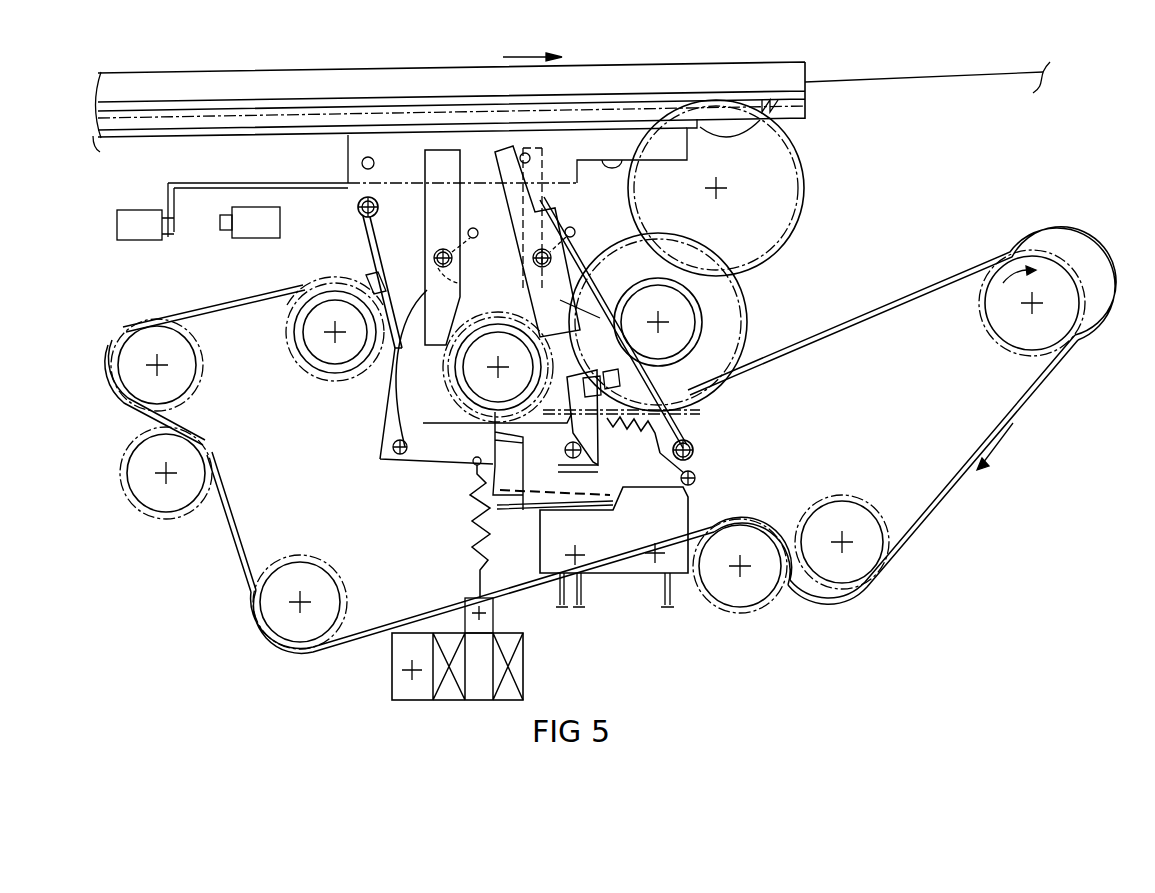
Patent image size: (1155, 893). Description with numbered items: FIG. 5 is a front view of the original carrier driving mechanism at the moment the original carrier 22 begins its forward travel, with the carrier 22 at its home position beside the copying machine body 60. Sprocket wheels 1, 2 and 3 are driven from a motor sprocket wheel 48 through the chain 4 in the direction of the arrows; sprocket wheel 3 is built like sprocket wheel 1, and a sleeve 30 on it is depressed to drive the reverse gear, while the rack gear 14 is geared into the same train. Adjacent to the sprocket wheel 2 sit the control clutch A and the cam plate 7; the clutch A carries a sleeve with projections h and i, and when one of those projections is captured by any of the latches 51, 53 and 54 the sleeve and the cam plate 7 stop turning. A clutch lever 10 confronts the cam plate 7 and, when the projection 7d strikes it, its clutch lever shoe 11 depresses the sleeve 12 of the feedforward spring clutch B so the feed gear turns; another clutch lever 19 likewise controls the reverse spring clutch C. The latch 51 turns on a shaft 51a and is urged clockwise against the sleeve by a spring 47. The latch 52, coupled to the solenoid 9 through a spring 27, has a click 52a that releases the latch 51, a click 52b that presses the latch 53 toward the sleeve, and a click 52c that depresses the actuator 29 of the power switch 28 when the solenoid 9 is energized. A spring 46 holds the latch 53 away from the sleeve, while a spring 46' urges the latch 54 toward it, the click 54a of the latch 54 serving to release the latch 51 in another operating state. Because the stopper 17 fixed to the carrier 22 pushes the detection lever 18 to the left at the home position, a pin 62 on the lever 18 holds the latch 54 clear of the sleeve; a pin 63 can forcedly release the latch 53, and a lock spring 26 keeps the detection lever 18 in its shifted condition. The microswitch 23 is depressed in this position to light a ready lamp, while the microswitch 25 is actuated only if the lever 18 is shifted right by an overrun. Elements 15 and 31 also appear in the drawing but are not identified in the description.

The original carrier 22 is at (790, 72).
The electrophotographic copying machine body 60 is at (984, 89).
The stop member 15 is at (776, 103).
The stopper 17 is at (787, 147).
The rack gear 14 is at (782, 197).
The clutch lever 19 is at (360, 233).
The detection lever 18 is at (335, 185).
The lock spring 26 is at (611, 167).
The microswitch 23 is at (137, 232).
The microswitch 25 is at (255, 228).
The pin 63 is at (372, 168).
The latch 53 is at (437, 213).
The pad 31 is at (378, 279).
The spring 46 is at (474, 255).
The pin 62 is at (522, 164).
The spring 46' is at (568, 242).
The cam plate 7 is at (510, 290).
The projection 7d is at (585, 268).
The latch 54 is at (545, 216).
The clutch lever 10 is at (690, 430).
The spring 47 is at (637, 450).
The click 54a is at (641, 435).
The sprocket wheel 1 is at (722, 350).
The sleeve 12 is at (702, 327).
The feedforward spring clutch B is at (700, 318).
The clutch lever shoe 11 is at (620, 385).
The sleeve 30 is at (303, 343).
The sprocket wheel 3 is at (320, 373).
The reverse spring clutch C is at (337, 355).
The sprocket wheel 2 is at (486, 372).
The control clutch A is at (465, 405).
The latch 52 is at (412, 453).
The click 52b is at (430, 345).
The projection h is at (470, 360).
The projection i is at (478, 400).
The spring 27 is at (468, 530).
The click 52a is at (476, 494).
The click 52c is at (500, 565).
The actuator 29 is at (532, 512).
The solenoid 9 is at (518, 662).
The latch 51 is at (590, 440).
The shaft 51a is at (578, 456).
The power switch 28 is at (668, 507).
The chain 4 is at (980, 443).
The motor sprocket wheel 48 is at (1017, 260).